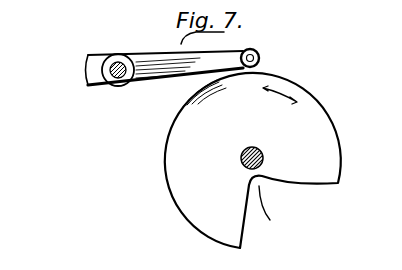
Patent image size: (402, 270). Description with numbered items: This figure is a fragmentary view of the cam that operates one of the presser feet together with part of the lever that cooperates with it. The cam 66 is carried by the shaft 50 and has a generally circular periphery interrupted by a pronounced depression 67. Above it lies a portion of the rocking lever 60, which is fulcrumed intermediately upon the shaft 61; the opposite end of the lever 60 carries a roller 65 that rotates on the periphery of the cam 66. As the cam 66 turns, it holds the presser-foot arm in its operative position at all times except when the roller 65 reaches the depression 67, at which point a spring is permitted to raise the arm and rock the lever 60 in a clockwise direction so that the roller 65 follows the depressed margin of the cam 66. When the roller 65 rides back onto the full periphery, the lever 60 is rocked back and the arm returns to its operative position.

The shaft 50 is at (265, 162).
The rocking lever 60 is at (93, 56).
The shaft 61 is at (128, 59).
The roller 65 is at (260, 56).
The cam 66 is at (168, 152).
The depression 67 is at (271, 221).